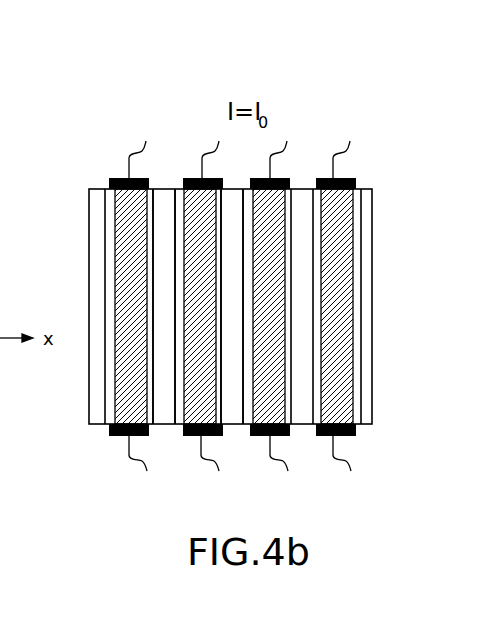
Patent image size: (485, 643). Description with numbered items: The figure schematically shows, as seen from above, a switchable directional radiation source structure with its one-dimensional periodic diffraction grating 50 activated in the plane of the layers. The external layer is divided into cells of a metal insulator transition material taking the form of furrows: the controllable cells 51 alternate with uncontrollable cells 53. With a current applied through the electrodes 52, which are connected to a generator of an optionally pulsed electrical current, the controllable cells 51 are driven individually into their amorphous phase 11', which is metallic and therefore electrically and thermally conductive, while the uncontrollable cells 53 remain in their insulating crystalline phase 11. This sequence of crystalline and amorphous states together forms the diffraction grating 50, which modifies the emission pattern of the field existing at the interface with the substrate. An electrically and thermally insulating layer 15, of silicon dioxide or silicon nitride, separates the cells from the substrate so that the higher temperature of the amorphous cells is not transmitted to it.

The diffraction grating 50 is at (328, 91).
The controllable cells 51 is at (123, 235).
The electrodes 52 is at (203, 155).
The uncontrollable cells 53 is at (165, 189).
The electrically and thermally insulating layer 15 is at (100, 427).
The crystalline phase 11 is at (237, 350).
The amorphous phase 11' is at (364, 350).